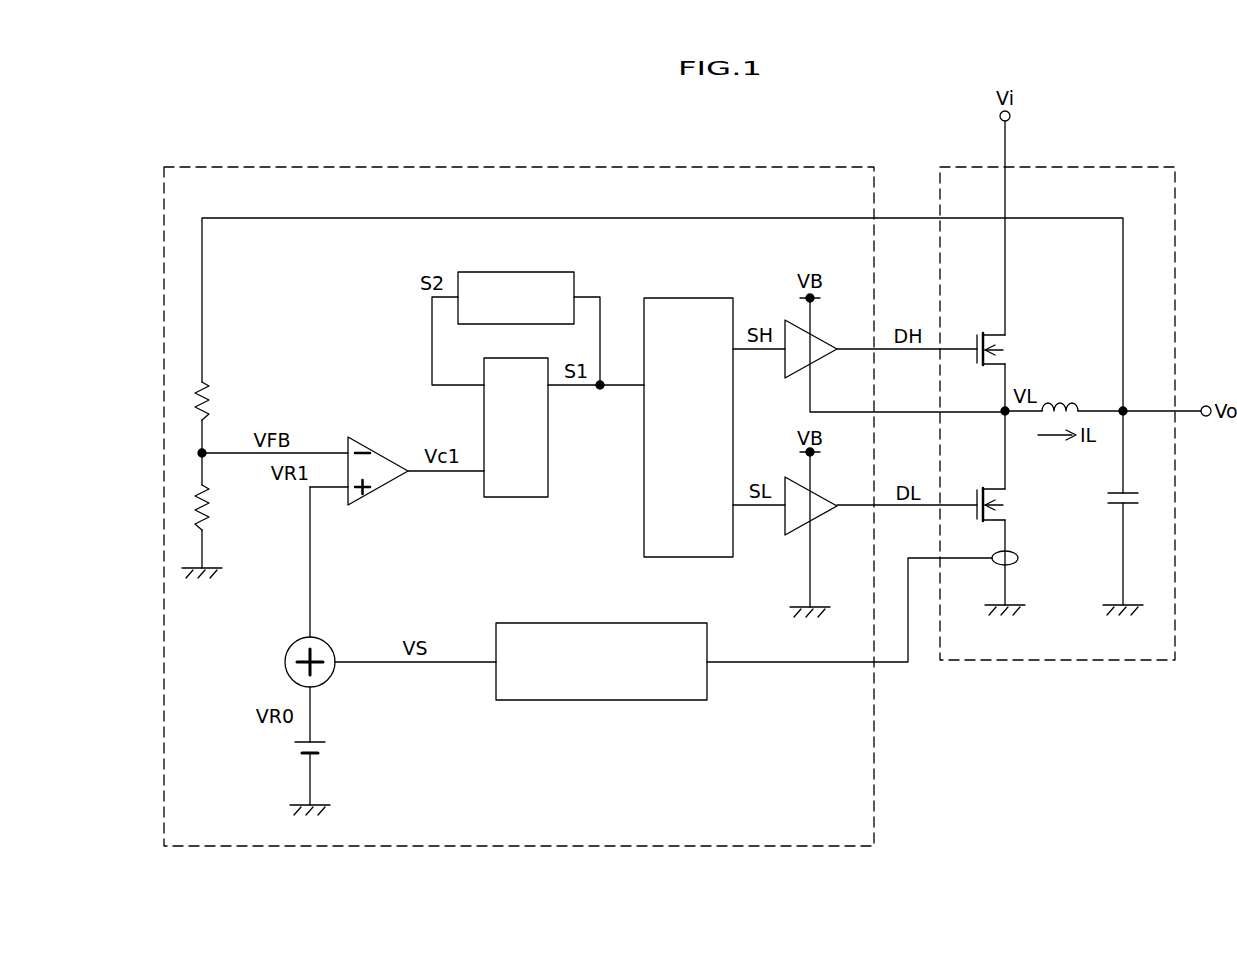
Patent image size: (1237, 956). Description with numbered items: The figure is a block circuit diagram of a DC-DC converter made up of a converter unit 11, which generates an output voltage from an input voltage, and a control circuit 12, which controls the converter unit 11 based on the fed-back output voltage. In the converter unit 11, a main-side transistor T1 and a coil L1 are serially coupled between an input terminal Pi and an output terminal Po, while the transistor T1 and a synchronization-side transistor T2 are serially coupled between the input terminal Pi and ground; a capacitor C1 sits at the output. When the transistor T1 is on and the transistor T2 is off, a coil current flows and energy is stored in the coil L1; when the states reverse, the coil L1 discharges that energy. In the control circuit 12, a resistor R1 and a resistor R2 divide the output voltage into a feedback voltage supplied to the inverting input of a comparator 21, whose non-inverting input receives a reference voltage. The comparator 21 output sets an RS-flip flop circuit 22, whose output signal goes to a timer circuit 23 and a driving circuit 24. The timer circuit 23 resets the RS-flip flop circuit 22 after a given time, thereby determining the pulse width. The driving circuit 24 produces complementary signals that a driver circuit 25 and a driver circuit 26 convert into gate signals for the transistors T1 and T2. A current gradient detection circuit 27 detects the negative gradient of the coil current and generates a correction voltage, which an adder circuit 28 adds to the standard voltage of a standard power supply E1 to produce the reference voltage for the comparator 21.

The converter unit 11 is at (1106, 167).
The control circuit 12 is at (830, 167).
The comparator 21 is at (377, 452).
The RS-flip flop circuit 22 is at (548, 473).
The timer circuit 23 is at (514, 272).
The driving circuit 24 is at (690, 298).
The driver circuit 25 is at (822, 338).
The driver circuit 26 is at (822, 495).
The current gradient detection circuit 27 is at (603, 623).
The adder circuit 28 is at (328, 645).
The resistor R1 is at (212, 393).
The resistor R2 is at (212, 511).
The standard power supply E1 is at (318, 752).
The transistor T1 is at (1008, 334).
The transistor T2 is at (1008, 520).
The coil L1 is at (1060, 398).
The capacitor C1 is at (1113, 505).
The input terminal Pi is at (1010, 116).
The output terminal Po is at (1204, 406).